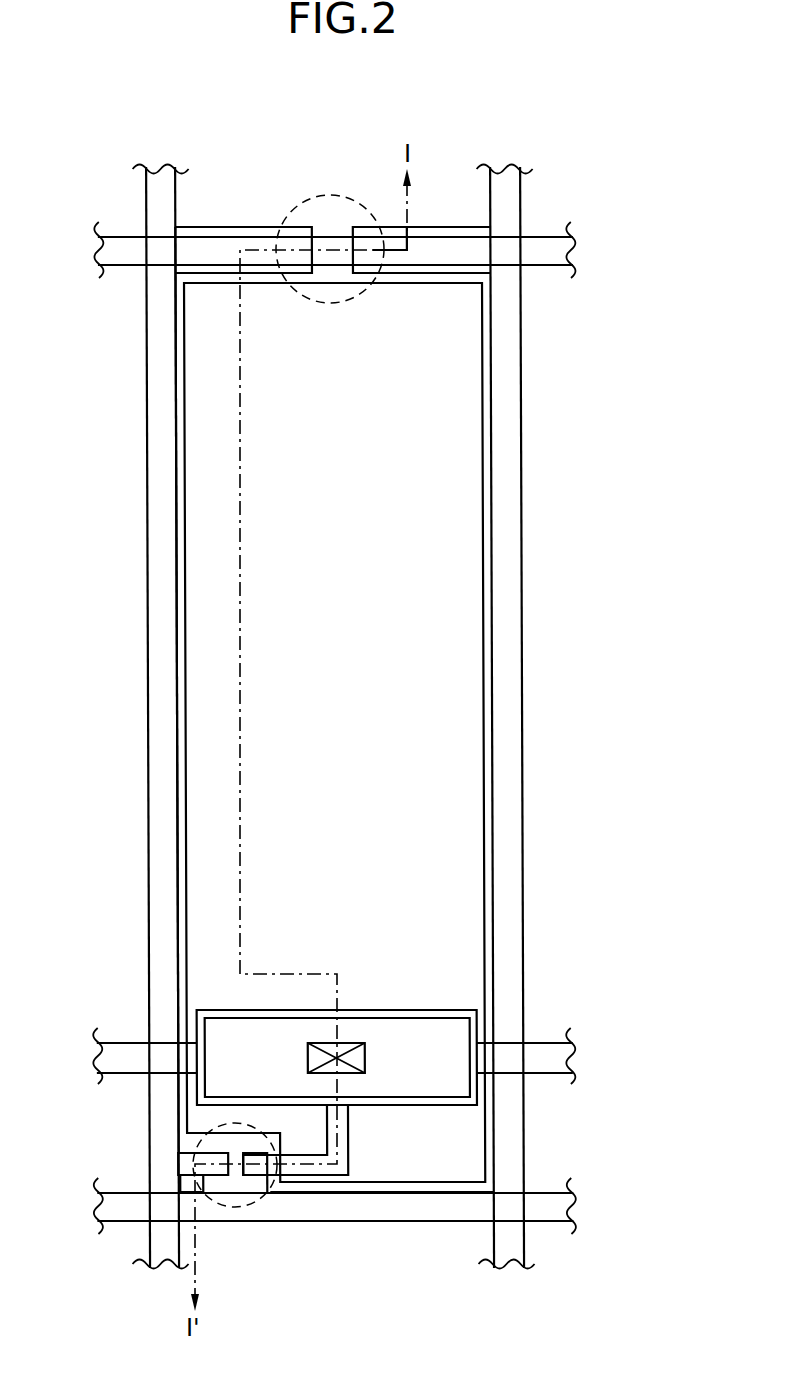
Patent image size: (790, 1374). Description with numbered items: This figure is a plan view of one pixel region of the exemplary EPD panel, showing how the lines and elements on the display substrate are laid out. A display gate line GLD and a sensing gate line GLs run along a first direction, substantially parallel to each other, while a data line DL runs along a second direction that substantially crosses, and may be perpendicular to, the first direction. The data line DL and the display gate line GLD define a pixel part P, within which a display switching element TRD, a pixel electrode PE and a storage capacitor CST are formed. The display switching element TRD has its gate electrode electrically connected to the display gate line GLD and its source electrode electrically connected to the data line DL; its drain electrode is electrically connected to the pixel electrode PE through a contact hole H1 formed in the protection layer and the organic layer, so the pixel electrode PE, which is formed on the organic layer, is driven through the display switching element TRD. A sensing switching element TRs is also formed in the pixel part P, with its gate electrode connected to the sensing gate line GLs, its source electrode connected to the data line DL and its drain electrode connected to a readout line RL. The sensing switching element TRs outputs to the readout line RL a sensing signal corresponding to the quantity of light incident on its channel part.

The data line DL is at (161, 174).
The readout line RL is at (504, 172).
The sensing gate line GLs is at (570, 248).
The display gate line GLD is at (575, 1209).
The pixel electrode PE is at (465, 656).
The pixel part P is at (373, 625).
The sensing switching element TRs is at (331, 197).
The display switching element TRD is at (234, 1208).
The storage capacitor CST is at (440, 1010).
The contact hole H1 is at (354, 1043).